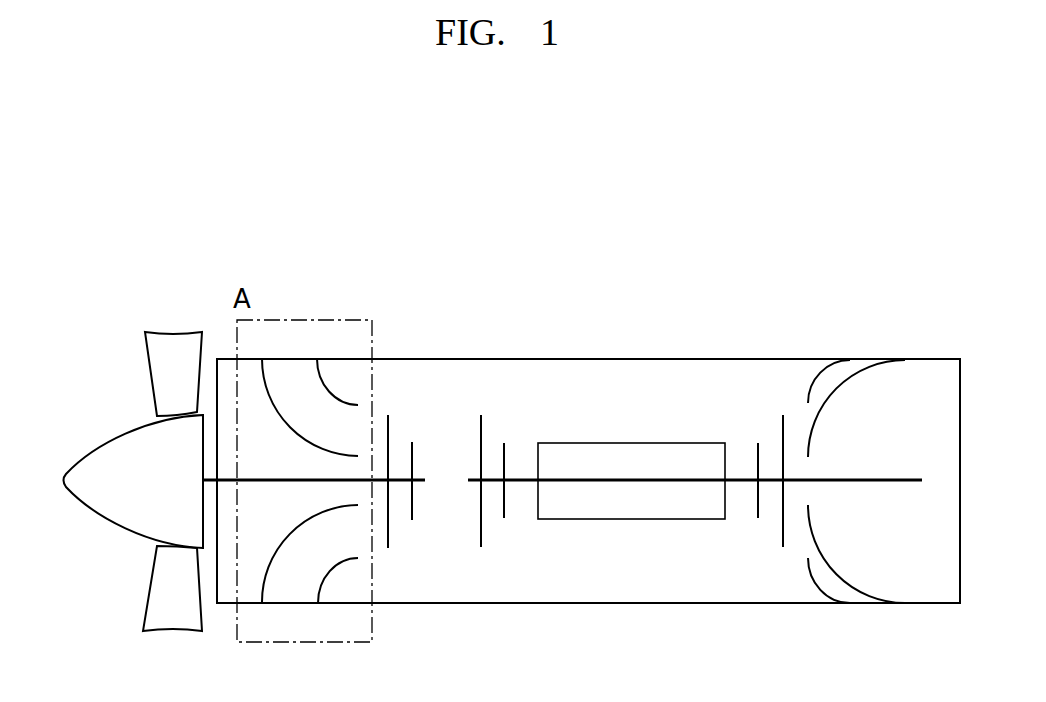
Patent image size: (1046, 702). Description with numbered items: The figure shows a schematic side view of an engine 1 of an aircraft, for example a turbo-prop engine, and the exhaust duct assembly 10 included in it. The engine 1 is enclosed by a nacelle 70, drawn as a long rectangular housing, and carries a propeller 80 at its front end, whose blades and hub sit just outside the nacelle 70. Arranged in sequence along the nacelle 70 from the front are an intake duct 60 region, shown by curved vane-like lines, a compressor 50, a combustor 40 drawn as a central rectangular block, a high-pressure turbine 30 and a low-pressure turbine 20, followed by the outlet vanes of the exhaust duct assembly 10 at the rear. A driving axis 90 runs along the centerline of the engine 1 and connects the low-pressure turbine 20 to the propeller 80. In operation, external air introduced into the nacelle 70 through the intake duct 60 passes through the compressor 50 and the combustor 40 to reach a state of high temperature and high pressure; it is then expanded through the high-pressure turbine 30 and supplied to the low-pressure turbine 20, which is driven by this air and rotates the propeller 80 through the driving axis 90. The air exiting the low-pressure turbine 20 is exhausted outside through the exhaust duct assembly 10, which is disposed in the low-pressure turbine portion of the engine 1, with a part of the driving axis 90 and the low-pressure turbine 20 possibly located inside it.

The engine 1 is at (901, 216).
The exhaust duct assembly 10 is at (338, 385).
The low-pressure turbine 20 is at (403, 535).
The high-pressure turbine 30 is at (503, 535).
The combustor 40 is at (632, 532).
The compressor 50 is at (762, 535).
The intake duct 60 is at (828, 577).
The nacelle 70 is at (650, 348).
The propeller 80 is at (98, 413).
The driving axis 90 is at (267, 488).